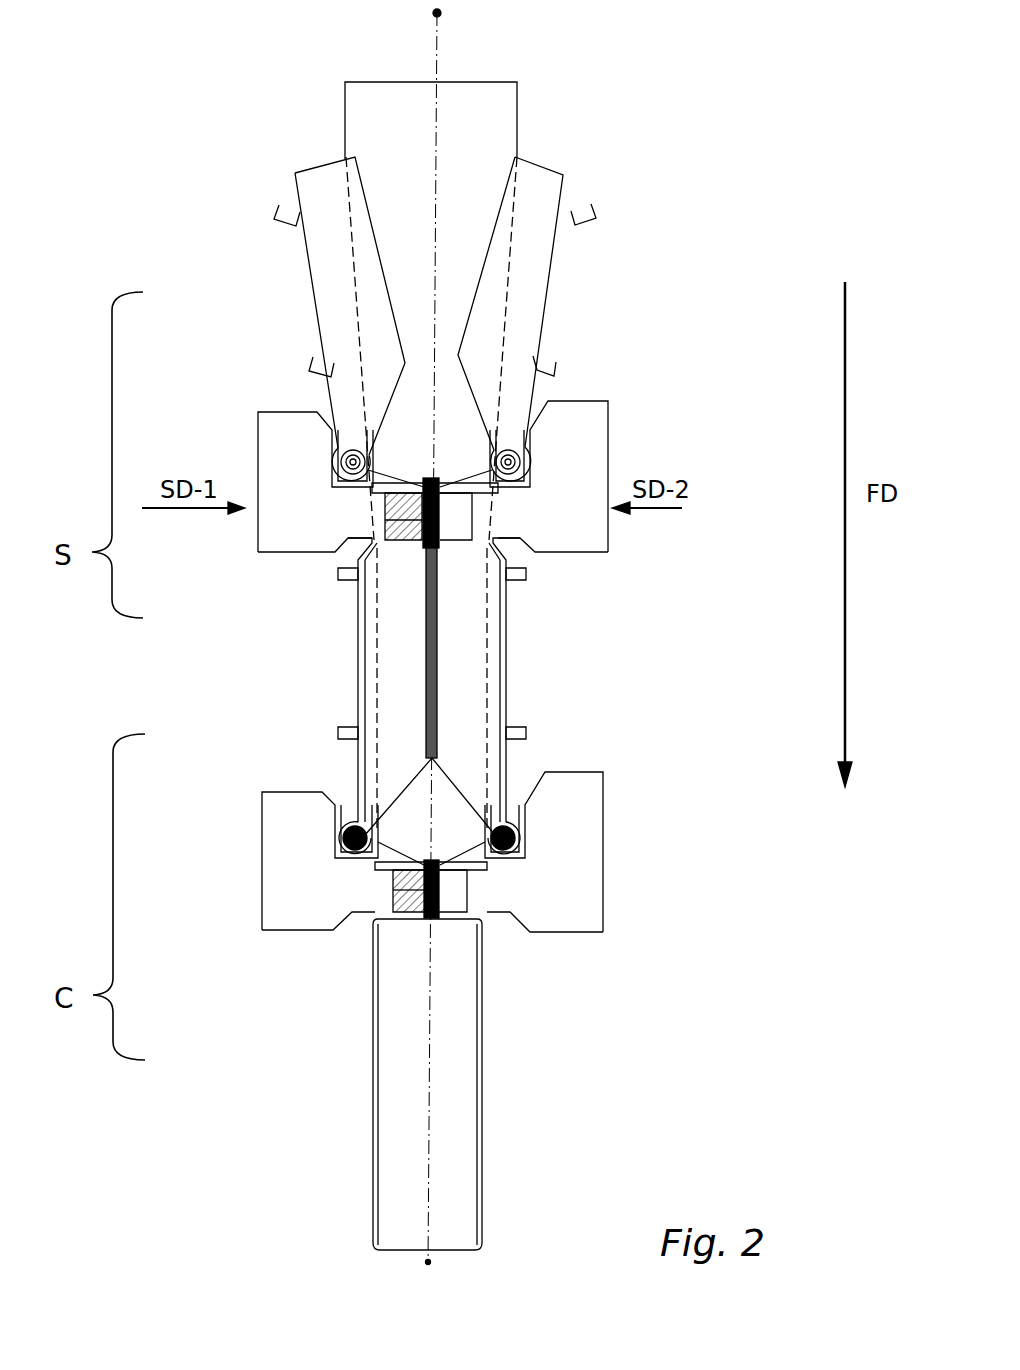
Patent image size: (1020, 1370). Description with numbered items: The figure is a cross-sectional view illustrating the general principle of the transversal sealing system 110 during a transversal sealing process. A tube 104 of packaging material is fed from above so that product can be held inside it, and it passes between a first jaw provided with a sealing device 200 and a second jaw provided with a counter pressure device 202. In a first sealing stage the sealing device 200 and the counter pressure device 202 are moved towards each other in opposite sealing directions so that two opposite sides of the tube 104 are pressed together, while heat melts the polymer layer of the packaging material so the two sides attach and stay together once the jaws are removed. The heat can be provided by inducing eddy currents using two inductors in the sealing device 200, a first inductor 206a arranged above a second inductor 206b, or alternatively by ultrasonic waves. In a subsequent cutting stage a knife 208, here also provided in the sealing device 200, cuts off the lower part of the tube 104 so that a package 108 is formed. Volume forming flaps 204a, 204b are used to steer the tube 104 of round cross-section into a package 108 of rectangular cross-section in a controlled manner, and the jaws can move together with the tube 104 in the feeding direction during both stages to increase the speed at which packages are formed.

The tube 104 is at (495, 133).
The package 108 is at (462, 1104).
The transversal sealing system 110 is at (220, 322).
The sealing device 200 is at (312, 532).
The counter pressure device 202 is at (607, 526).
The volume forming flap 204a is at (300, 188).
The volume forming flap 204b is at (555, 196).
The first inductor 206a is at (414, 878).
The second inductor 206b is at (427, 906).
The knife 208 is at (380, 906).